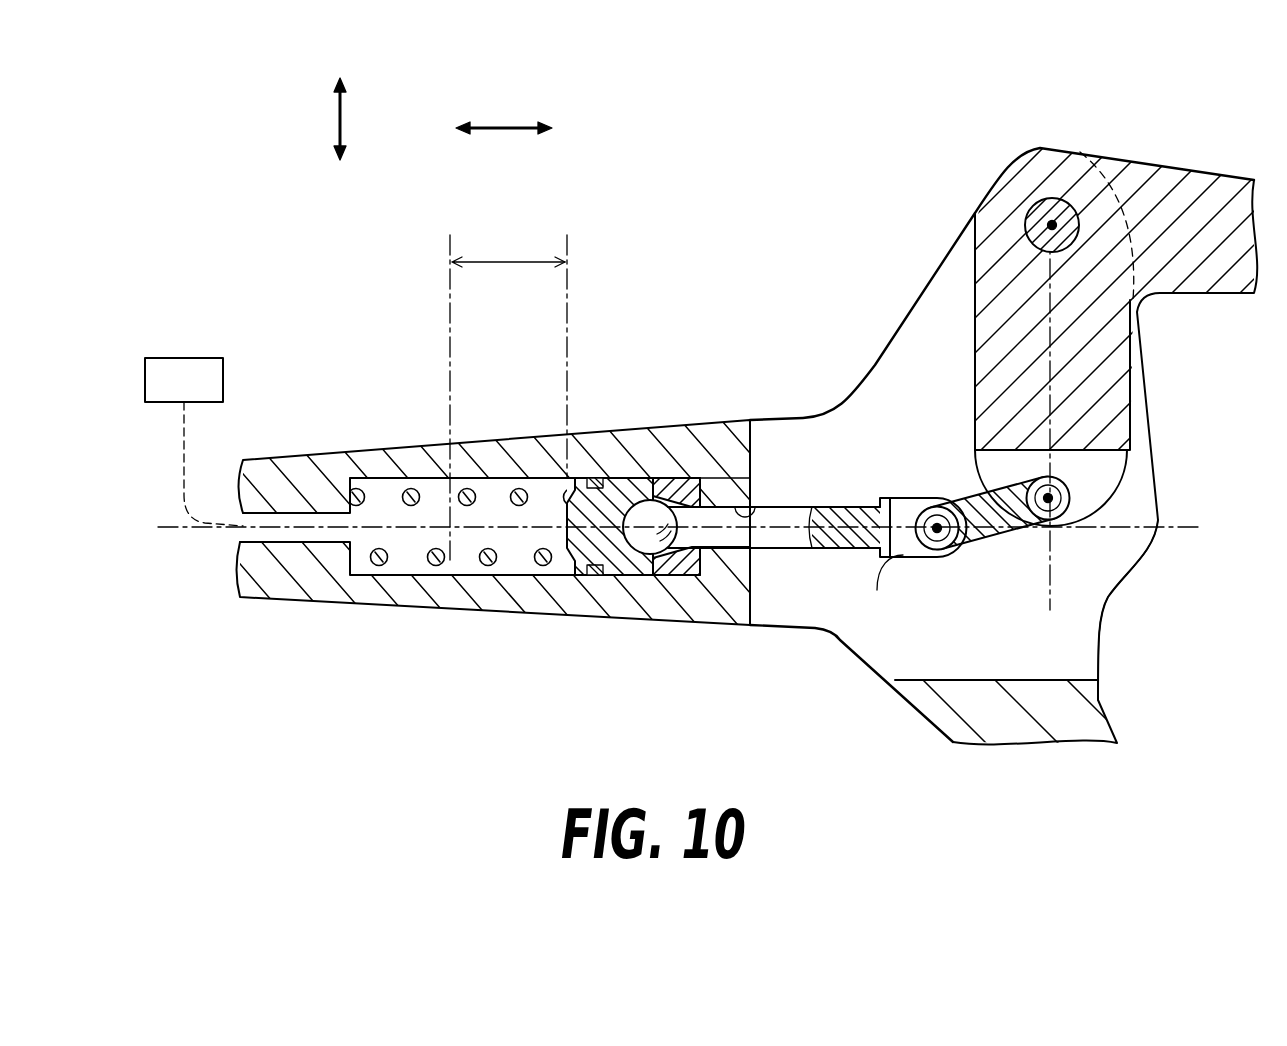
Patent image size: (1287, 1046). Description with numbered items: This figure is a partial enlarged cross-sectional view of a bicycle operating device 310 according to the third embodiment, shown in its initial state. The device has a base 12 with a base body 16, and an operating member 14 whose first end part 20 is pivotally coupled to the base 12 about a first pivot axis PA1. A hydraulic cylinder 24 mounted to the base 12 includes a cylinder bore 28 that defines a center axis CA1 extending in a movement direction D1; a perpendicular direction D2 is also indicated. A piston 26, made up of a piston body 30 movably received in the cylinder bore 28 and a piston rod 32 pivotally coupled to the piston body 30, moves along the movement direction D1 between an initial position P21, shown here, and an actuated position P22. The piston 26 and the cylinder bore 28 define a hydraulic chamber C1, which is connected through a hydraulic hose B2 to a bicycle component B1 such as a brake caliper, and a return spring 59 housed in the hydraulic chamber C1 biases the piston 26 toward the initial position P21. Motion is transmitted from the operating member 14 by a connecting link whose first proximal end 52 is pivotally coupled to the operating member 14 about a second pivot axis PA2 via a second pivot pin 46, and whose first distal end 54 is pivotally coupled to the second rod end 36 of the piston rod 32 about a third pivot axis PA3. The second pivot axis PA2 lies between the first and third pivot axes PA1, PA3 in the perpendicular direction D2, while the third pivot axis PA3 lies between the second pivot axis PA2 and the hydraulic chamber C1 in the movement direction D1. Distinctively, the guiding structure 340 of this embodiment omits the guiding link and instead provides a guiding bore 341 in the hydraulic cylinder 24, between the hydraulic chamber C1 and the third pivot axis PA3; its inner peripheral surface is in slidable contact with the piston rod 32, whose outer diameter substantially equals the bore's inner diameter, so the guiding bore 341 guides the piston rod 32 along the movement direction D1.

The bicycle operating device 310 is at (705, 153).
The first end part 20 is at (1013, 180).
The first pivot axis PA1 is at (1054, 198).
The operating member 14 is at (1184, 162).
The second pivot pin 46 is at (1048, 470).
The second pivot axis PA2 is at (1047, 476).
The third pivot axis PA3 is at (937, 506).
The guiding structure 340 is at (717, 496).
The guiding bore 341 is at (768, 505).
The second rod end 36 is at (905, 513).
The first proximal end 52 is at (1070, 496).
The base body 16 is at (1124, 583).
The base 12 is at (1122, 630).
The first distal end 54 is at (877, 590).
The piston body 30 is at (625, 577).
The piston rod 32 is at (795, 540).
The piston 26 is at (775, 700).
The return spring 59 is at (490, 566).
The hydraulic cylinder 24 is at (420, 590).
The cylinder bore 28 is at (408, 576).
The hydraulic chamber C1 is at (388, 498).
The bicycle component B1 is at (196, 395).
The hydraulic hose B2 is at (185, 447).
The center axis CA1 is at (178, 532).
The initial position P21 is at (567, 250).
The actuated position P22 is at (450, 243).
The movement direction D1 is at (507, 126).
The perpendicular direction D2 is at (340, 112).